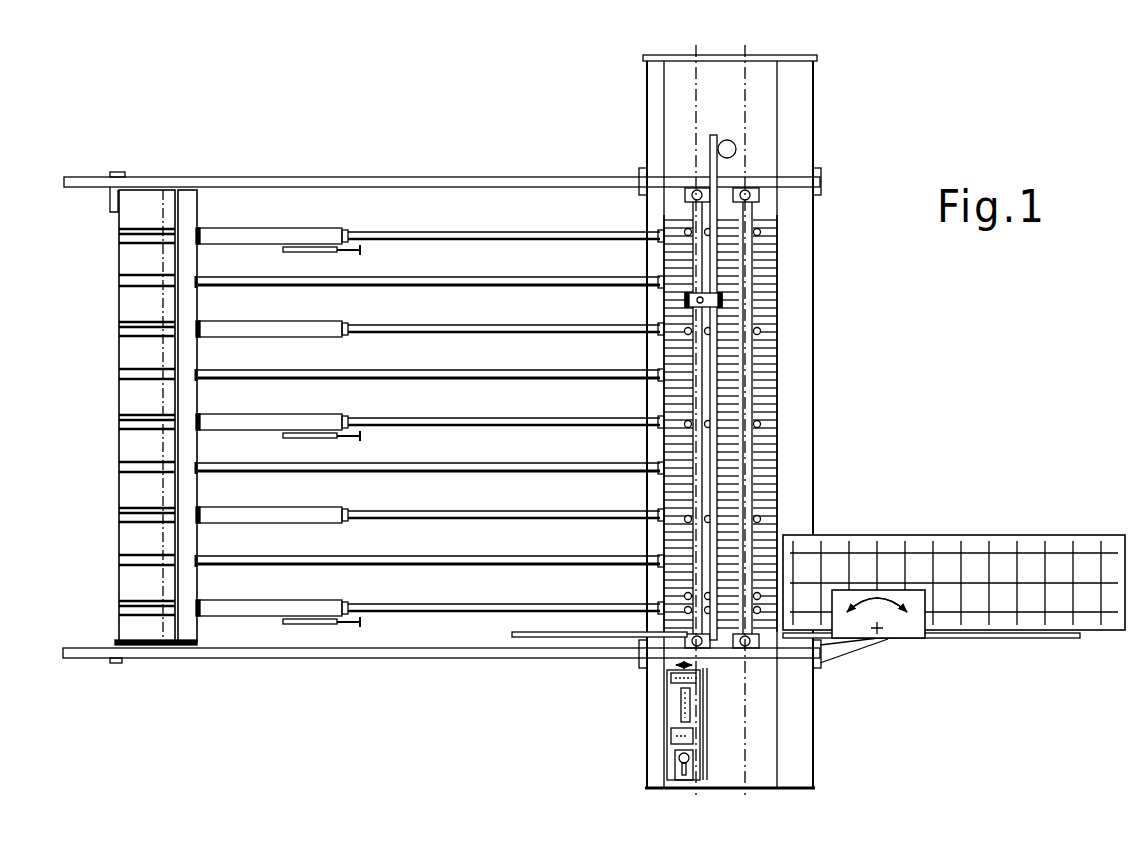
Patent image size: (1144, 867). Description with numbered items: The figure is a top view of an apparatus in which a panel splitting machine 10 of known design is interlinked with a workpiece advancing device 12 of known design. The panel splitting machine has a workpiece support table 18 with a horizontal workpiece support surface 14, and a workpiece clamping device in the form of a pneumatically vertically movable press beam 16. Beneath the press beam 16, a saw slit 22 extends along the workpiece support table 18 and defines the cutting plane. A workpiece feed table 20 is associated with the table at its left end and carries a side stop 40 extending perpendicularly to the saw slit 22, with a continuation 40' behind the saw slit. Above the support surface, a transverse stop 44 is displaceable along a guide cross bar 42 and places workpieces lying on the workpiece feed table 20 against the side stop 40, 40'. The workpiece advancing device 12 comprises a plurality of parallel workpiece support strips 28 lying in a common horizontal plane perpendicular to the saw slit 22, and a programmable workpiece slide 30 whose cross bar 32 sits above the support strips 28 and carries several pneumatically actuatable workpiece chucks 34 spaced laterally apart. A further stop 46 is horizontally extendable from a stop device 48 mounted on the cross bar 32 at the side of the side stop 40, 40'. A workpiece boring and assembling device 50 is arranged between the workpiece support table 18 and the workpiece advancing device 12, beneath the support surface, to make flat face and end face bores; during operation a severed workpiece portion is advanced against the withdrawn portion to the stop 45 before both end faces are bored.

The panel splitting machine 10 is at (799, 112).
The workpiece advancing device 12 is at (329, 668).
The workpiece support surface 14 is at (766, 290).
The press beam 16 is at (762, 447).
The workpiece support table 18 is at (782, 350).
The workpiece feed table 20 is at (973, 603).
The saw slit 22 is at (762, 490).
The workpiece support strips 28 is at (409, 237).
The programmable workpiece slide 30 is at (148, 643).
The cross bar 32 is at (186, 625).
The workpiece chucks 34 is at (259, 608).
The side stop 40 is at (931, 665).
The continuation of side stop 40' is at (598, 674).
The guide cross bar 42 is at (716, 170).
The transverse stop 44 is at (685, 296).
The stop 45 is at (713, 622).
The further stop 46 is at (348, 251).
The stop device 48 is at (285, 245).
The workpiece boring and assembling device 50 is at (668, 713).